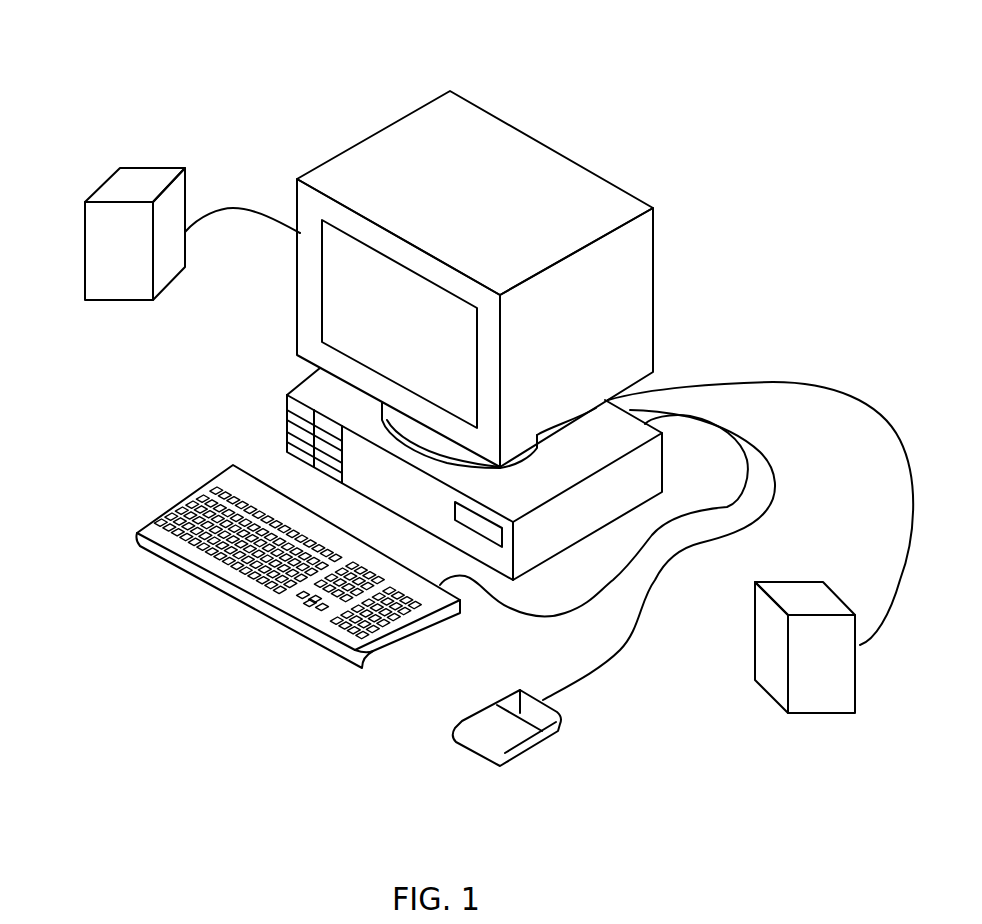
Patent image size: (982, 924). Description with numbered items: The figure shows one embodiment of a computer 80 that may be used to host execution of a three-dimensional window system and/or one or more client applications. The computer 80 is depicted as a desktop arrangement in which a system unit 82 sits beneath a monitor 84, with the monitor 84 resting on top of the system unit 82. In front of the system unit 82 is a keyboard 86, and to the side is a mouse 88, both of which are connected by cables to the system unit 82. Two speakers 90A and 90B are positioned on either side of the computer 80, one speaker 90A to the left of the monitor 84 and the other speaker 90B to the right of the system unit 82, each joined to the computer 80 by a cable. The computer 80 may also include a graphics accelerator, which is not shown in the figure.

The computer 80 is at (138, 60).
The system unit 82 is at (302, 392).
The monitor 84 is at (535, 167).
The keyboard 86 is at (353, 649).
The mouse 88 is at (495, 742).
The speaker 90A is at (115, 298).
The speaker 90B is at (812, 707).